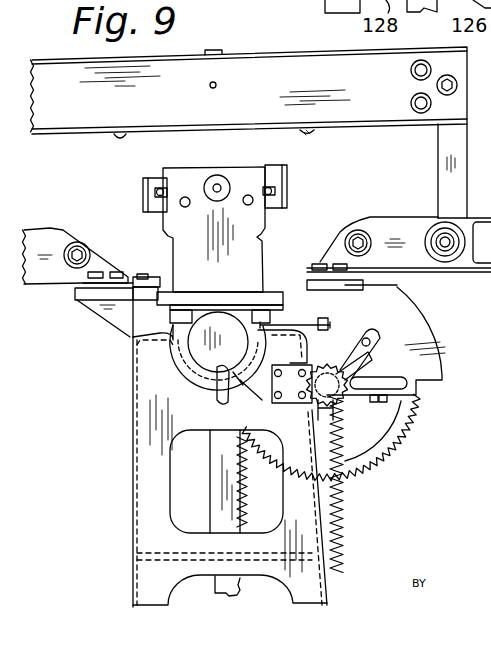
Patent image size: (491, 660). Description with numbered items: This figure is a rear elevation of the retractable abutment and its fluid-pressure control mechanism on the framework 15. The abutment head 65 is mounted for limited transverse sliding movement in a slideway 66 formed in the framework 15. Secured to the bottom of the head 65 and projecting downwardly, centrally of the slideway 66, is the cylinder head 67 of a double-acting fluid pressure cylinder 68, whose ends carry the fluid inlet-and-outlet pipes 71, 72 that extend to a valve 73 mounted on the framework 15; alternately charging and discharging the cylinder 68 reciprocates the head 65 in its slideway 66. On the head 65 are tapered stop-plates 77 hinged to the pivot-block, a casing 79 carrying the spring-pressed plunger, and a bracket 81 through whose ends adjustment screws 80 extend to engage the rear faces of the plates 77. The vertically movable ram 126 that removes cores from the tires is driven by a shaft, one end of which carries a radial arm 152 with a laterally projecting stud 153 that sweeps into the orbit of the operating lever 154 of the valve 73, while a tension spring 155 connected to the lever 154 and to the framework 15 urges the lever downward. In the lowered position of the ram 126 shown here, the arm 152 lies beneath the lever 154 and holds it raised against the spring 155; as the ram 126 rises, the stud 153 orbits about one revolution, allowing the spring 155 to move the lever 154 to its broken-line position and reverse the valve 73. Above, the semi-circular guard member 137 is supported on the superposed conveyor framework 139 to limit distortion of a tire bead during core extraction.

The framework 139 is at (250, 52).
The guard member 137 is at (118, 142).
The ram 126 is at (224, 596).
The adjustment screws 80 is at (168, 190).
The casing 79 is at (213, 174).
The bracket 81 is at (277, 173).
The head 65 is at (185, 253).
The stop-plates 77 is at (265, 231).
The slideway 66 is at (153, 300).
The cylinder head 67 is at (200, 317).
The fluid pressure cylinder 68 is at (200, 365).
The framework 15 is at (133, 450).
The fluid inlet-and-outlet pipe 72 is at (194, 430).
The fluid inlet-and-outlet pipe 71 is at (326, 323).
The valve 73 is at (329, 362).
The operating lever 154 is at (372, 335).
The stud 153 is at (368, 350).
The radial arm 152 is at (370, 360).
The tension spring 155 is at (342, 498).